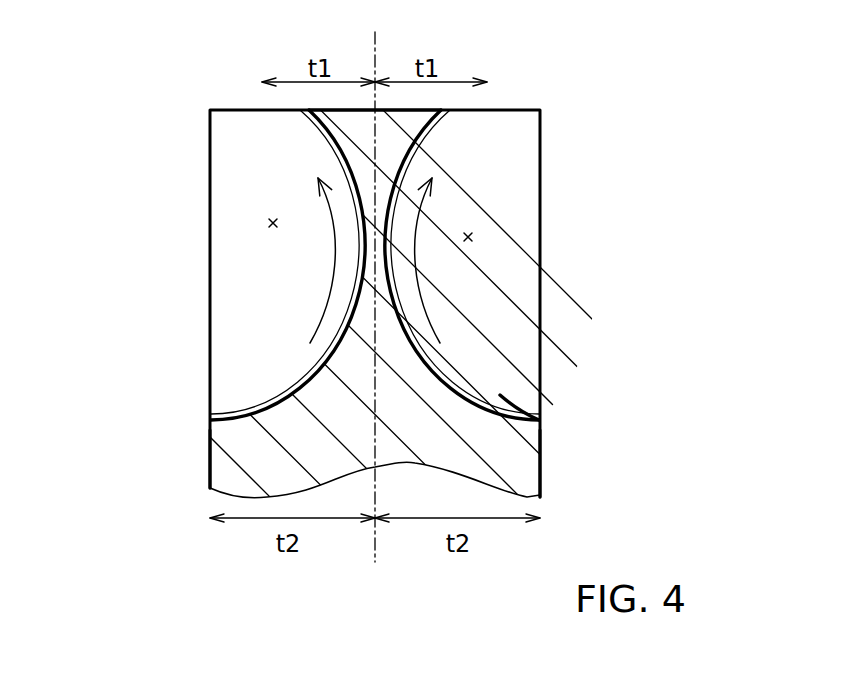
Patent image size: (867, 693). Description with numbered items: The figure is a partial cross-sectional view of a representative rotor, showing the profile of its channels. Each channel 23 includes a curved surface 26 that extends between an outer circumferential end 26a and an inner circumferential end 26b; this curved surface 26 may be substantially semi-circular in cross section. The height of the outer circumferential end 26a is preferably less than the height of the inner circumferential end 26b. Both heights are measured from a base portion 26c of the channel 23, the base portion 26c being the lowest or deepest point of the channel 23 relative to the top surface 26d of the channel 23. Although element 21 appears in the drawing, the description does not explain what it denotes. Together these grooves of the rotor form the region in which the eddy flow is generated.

The cylinder bore 21 is at (243, 163).
The channel 23 is at (270, 223).
The curved surface 26 is at (313, 367).
The outer circumferential end 26a is at (307, 110).
The inner circumferential end 26b is at (210, 456).
The base portion 26c is at (368, 249).
The top surface 26d is at (540, 421).